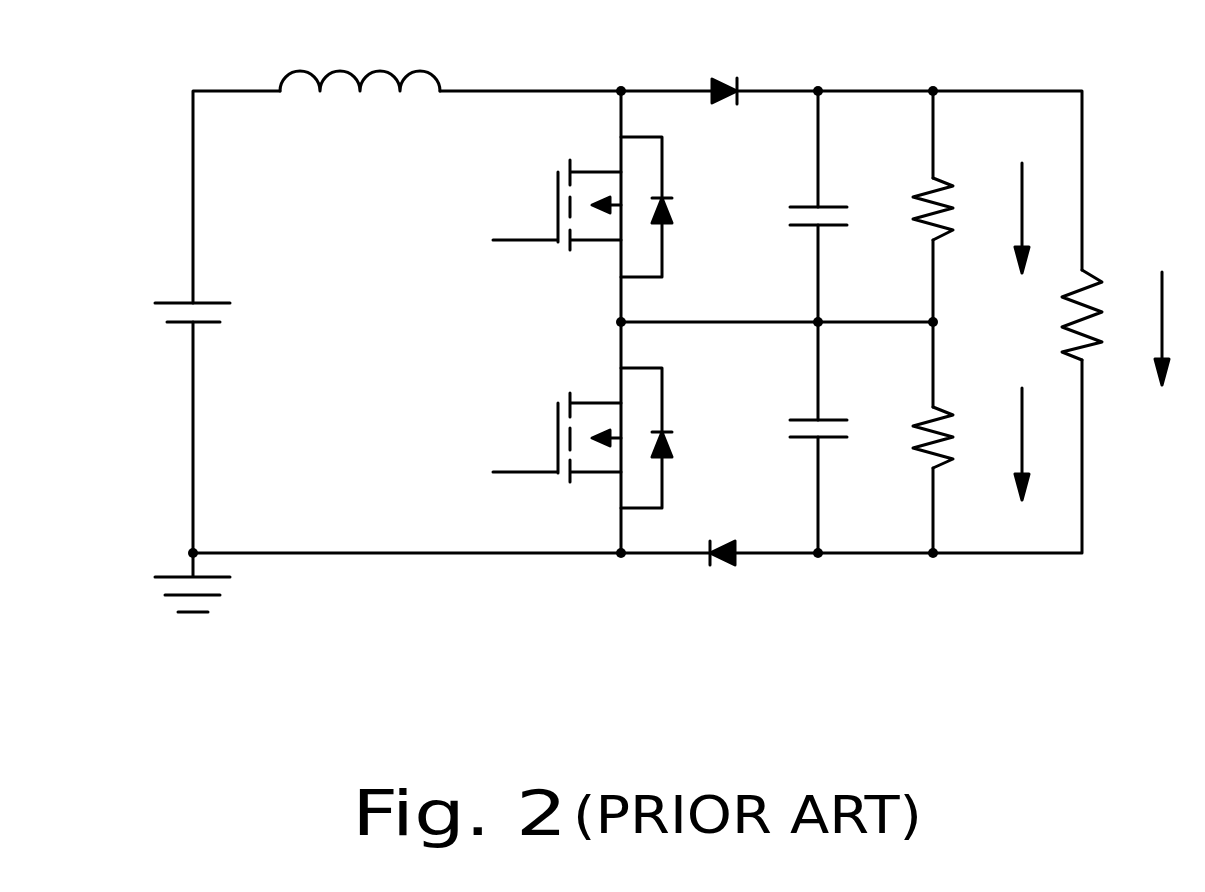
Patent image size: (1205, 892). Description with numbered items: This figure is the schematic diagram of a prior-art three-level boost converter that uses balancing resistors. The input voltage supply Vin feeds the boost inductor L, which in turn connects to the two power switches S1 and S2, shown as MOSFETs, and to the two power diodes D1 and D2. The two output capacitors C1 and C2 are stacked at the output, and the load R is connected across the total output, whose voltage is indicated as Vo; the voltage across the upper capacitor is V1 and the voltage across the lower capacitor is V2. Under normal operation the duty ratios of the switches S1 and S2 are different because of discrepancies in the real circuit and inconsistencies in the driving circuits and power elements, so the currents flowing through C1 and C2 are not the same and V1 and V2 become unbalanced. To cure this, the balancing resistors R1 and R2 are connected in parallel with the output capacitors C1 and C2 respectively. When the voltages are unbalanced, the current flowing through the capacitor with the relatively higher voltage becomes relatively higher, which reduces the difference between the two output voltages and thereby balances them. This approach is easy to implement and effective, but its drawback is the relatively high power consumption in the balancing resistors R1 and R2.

The boost inductor L is at (360, 116).
The input voltage supply Vin is at (223, 320).
The power switch S1 is at (582, 207).
The power switch S2 is at (582, 438).
The power diode D1 is at (729, 115).
The power diode D2 is at (716, 527).
The output capacitor C1 is at (797, 220).
The output capacitor C2 is at (794, 434).
The balancing resistor R1 is at (956, 210).
The balancing resistor R2 is at (956, 437).
The load R is at (1065, 315).
The output voltage across first output capacitor V1 is at (1043, 218).
The output voltage across second output capacitor V2 is at (1043, 444).
The output voltage Vo is at (1142, 328).